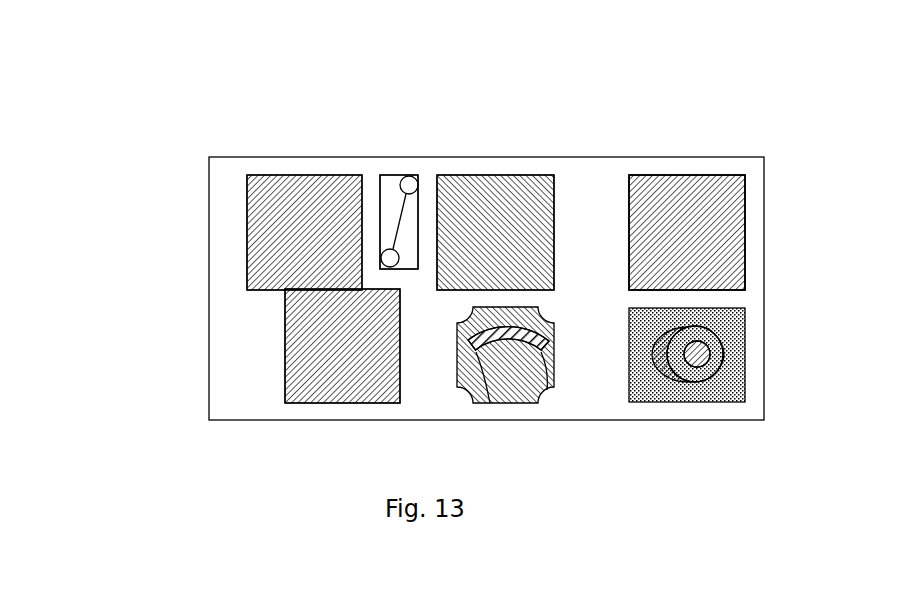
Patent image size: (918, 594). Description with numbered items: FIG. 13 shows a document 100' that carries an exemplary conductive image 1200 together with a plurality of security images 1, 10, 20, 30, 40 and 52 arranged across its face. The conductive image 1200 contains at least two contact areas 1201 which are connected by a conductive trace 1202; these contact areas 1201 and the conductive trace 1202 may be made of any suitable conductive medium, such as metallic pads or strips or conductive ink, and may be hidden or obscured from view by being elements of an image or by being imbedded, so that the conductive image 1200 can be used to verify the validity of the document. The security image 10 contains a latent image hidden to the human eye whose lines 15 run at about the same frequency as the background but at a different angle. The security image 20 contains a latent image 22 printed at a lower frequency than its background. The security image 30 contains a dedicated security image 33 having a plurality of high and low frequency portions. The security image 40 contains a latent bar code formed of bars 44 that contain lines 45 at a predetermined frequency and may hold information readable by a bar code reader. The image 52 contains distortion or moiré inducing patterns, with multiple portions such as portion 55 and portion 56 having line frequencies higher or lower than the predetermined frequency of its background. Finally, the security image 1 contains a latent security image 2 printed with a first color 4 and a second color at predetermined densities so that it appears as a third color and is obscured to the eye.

The document 100' is at (401, 271).
The document 10 is at (247, 213).
The lines 15 is at (288, 230).
The document 20 is at (455, 175).
The latent image 22 is at (500, 215).
The document 30 is at (285, 333).
The dedicated security image 33 is at (305, 368).
The document 40 is at (745, 180).
The bars 44 is at (745, 242).
The lines 45 is at (733, 212).
The conductive image 1200 is at (398, 175).
The contact areas 1201 is at (417, 175).
The conductive trace 1202 is at (384, 175).
The image 52 is at (474, 403).
The portion 55 is at (493, 403).
The portion 56 is at (548, 392).
The document 1 is at (720, 318).
The latent security image 2 is at (723, 345).
The first color 4 is at (725, 357).